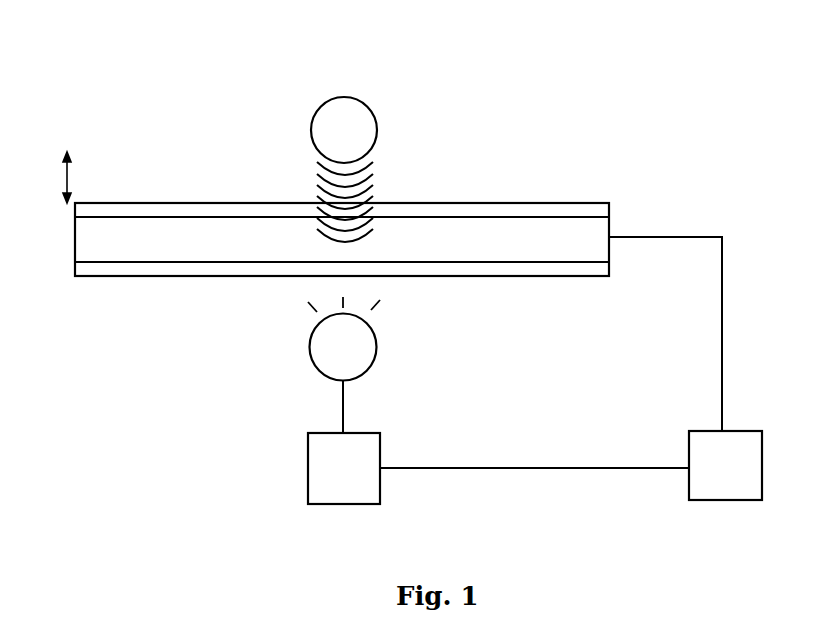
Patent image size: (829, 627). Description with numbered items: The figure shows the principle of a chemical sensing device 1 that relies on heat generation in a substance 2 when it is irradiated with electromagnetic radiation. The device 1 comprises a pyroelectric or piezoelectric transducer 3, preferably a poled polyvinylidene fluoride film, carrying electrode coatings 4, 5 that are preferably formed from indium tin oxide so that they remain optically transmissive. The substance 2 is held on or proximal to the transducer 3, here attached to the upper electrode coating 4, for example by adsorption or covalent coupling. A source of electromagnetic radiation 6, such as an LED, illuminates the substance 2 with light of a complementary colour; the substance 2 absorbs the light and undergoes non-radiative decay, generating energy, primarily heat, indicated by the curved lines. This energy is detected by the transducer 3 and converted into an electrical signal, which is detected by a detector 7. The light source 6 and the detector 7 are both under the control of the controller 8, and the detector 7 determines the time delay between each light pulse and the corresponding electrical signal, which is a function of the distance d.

The chemical sensing device 1 is at (520, 79).
The substance 2 is at (348, 128).
The pyroelectric or piezoelectric transducer 3 is at (95, 237).
The upper electrode coating 4 is at (598, 205).
The electrode coating 5 is at (598, 266).
The source of electromagnetic radiation 6 is at (342, 354).
The detector 7 is at (745, 486).
The controller 8 is at (317, 491).